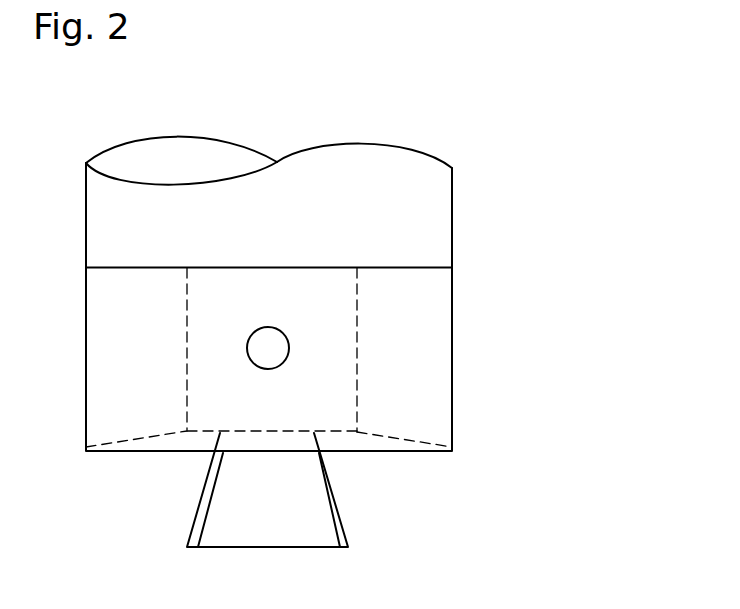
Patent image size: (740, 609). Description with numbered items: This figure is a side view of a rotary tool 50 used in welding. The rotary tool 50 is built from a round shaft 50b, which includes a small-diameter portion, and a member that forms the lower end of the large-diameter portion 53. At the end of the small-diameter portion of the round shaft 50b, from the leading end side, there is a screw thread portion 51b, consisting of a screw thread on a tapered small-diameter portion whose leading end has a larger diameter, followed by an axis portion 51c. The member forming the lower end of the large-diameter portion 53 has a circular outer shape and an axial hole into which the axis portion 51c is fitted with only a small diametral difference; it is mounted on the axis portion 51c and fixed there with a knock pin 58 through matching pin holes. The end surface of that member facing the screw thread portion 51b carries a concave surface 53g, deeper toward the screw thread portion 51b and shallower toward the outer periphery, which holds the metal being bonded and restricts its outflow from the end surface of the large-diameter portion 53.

The rotary tool 50 is at (478, 180).
The round shaft 50b is at (438, 222).
The large-diameter portion 53 is at (437, 343).
The axis portion 51c is at (360, 380).
The concave surface 53g is at (403, 443).
The knock pin 58 is at (288, 332).
The screw thread portion 51b is at (335, 503).